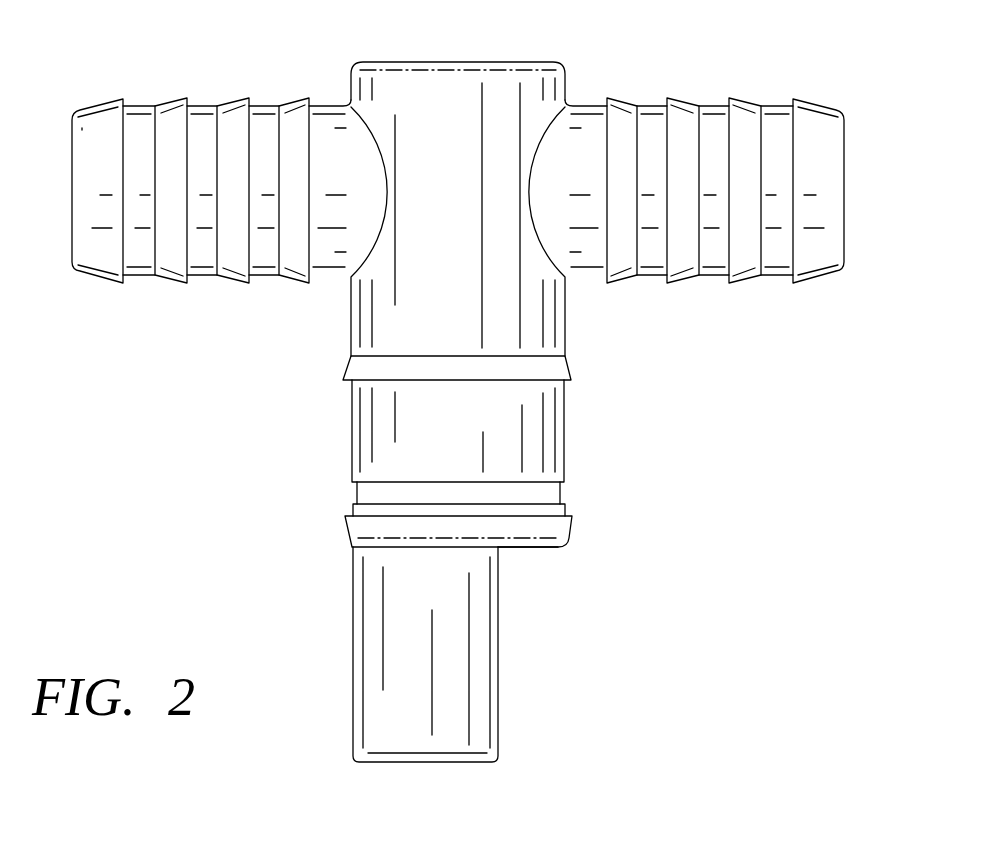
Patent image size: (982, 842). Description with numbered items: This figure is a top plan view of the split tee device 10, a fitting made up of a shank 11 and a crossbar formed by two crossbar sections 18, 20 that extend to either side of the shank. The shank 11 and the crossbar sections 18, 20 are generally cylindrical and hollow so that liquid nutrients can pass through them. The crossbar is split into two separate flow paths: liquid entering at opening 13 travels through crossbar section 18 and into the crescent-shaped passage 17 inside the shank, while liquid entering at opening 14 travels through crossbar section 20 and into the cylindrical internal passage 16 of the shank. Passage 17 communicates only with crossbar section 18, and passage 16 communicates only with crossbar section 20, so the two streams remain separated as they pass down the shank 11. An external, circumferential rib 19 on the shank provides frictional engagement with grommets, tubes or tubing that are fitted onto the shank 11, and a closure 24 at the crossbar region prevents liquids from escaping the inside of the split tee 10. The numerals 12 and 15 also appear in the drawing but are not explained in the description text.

The split tee device 10 is at (294, 428).
The shank 11 is at (580, 406).
The barbed branch 12 is at (766, 288).
The opening 13 is at (843, 136).
The opening 14 is at (72, 137).
The lower leg 15 is at (478, 700).
The internal passage 16 is at (432, 762).
The crescent-shaped passage 17 is at (535, 548).
The crossbar section 18 is at (687, 106).
The external circumferential rib 19 is at (571, 539).
The crossbar section 20 is at (232, 113).
The closure 24 is at (456, 62).